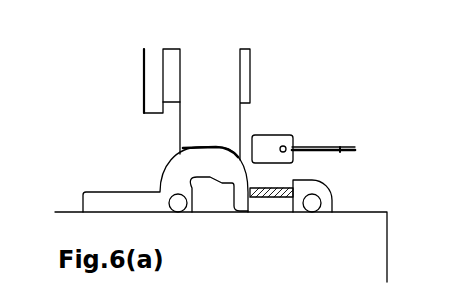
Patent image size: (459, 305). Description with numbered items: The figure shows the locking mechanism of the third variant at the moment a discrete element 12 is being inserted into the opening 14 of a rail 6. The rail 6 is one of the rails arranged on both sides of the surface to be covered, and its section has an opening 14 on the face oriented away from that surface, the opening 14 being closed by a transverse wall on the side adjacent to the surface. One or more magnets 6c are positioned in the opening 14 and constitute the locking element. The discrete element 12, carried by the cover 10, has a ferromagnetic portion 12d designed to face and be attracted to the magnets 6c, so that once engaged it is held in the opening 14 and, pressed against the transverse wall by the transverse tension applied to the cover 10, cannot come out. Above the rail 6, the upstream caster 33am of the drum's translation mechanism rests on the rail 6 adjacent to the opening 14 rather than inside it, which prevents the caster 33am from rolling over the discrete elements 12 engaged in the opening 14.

The rail 6 is at (268, 202).
The magnet 6c is at (287, 198).
The cover 10 is at (352, 146).
The discrete element 12 is at (293, 142).
The ferromagnetic portion 12d is at (283, 146).
The opening 14 is at (287, 182).
The upstream caster 33am is at (209, 64).